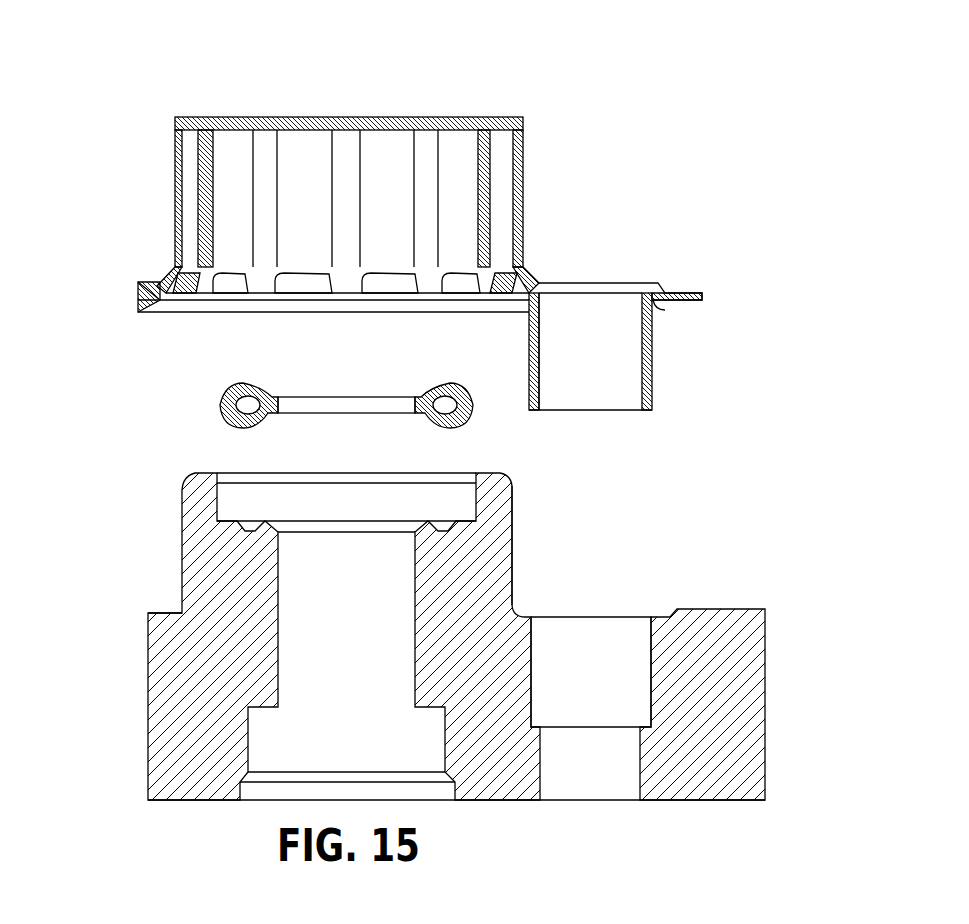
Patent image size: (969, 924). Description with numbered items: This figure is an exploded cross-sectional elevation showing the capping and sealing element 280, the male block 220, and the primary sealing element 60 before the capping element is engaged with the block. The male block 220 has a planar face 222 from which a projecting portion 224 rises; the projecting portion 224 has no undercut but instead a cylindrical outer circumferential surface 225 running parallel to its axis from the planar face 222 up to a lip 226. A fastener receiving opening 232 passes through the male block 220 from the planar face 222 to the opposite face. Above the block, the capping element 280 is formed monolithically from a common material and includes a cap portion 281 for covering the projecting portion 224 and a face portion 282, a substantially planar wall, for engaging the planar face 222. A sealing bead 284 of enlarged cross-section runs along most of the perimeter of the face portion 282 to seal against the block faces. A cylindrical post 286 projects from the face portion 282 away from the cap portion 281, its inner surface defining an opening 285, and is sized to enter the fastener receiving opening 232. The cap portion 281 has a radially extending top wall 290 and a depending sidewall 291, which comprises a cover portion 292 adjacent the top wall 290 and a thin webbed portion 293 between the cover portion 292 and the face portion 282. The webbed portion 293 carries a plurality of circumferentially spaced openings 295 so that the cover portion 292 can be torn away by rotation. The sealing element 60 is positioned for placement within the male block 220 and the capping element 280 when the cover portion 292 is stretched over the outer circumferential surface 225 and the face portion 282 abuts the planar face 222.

The primary sealing element 60 is at (224, 391).
The male block 220 is at (732, 692).
The planar face 222 is at (160, 613).
The projecting portion 224 is at (180, 520).
The cylindrical outer circumferential surface 225 is at (513, 540).
The lip 226 is at (200, 473).
The fastener receiving opening 232 is at (650, 668).
The capping and sealing element 280 is at (604, 206).
The cap portion 281 is at (163, 107).
The face portion 282 is at (682, 288).
The sealing bead 284 is at (138, 300).
The opening 285 is at (642, 345).
The cylindrical post 286 is at (652, 372).
The top wall 290 is at (348, 120).
The sidewall 291 is at (175, 165).
The cover portion 292 is at (524, 140).
The webbed portion 293 is at (164, 282).
The openings 295 is at (470, 283).